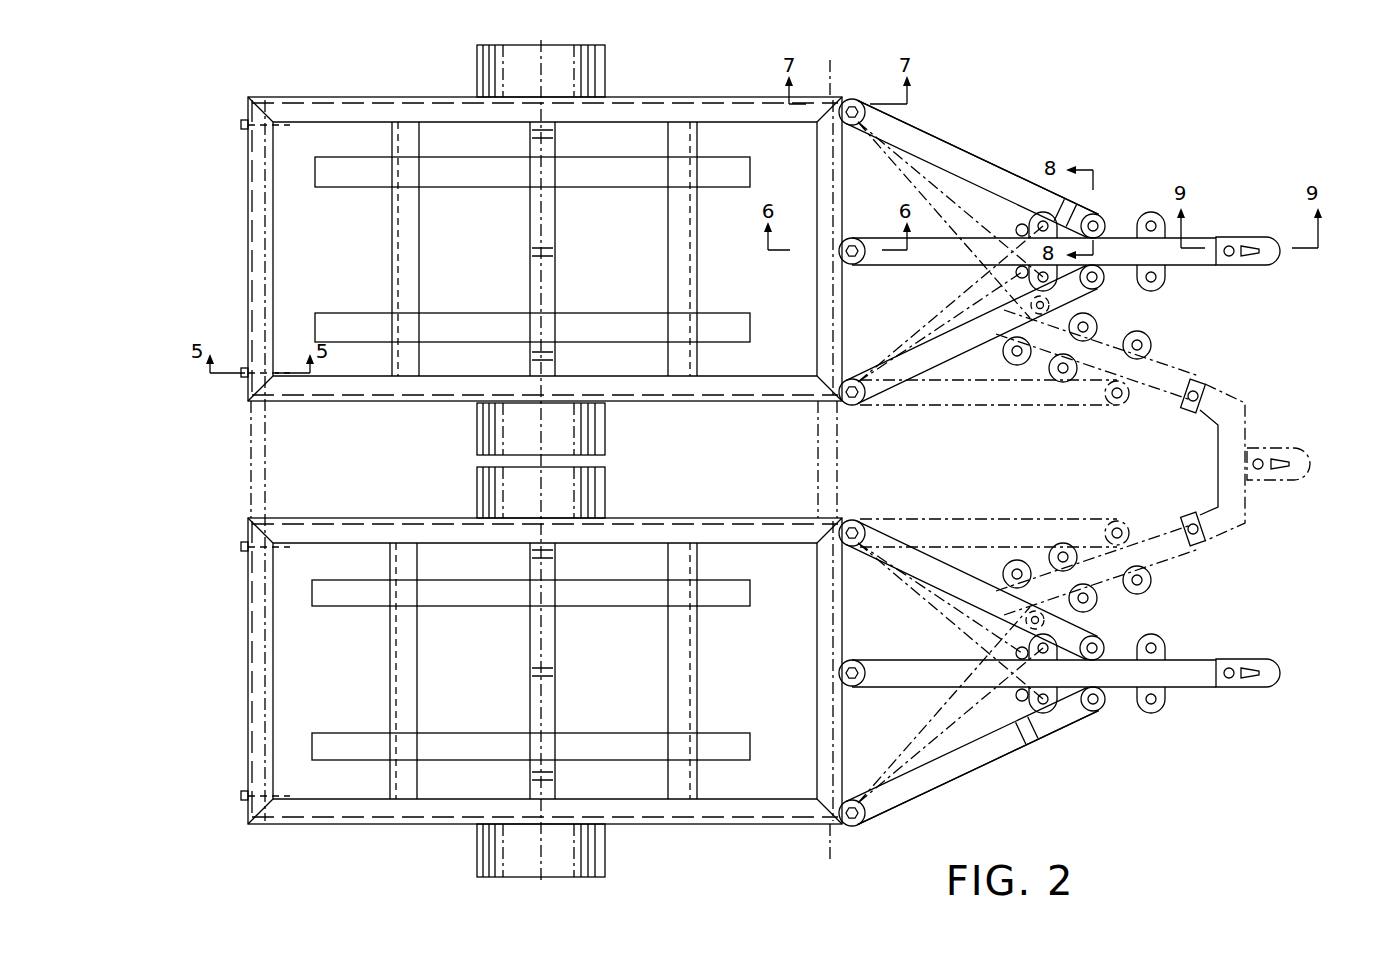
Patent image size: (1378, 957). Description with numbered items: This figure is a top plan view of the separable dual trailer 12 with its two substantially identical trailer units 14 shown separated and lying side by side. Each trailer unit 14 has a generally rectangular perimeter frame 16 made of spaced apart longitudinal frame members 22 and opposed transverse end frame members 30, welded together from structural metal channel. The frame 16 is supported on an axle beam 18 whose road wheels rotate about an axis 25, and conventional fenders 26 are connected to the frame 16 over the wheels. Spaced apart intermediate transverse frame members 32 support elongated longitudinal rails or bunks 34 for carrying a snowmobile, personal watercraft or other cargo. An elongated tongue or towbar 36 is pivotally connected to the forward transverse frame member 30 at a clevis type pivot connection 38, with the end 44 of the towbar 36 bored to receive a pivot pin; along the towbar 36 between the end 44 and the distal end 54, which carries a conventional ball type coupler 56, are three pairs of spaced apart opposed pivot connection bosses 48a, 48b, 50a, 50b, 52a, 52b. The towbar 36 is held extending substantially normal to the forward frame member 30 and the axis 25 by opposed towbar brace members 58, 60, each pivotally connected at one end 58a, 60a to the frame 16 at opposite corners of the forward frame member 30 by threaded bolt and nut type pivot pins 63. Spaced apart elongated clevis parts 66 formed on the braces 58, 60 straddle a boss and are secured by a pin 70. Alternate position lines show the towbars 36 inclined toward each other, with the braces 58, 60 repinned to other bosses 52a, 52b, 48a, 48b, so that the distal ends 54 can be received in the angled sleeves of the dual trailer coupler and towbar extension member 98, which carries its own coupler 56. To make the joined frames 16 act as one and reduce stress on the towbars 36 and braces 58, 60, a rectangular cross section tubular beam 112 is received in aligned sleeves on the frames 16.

The dual trailer 12 is at (1260, 377).
The trailer unit 14 is at (948, 139).
The perimeter frame 16 is at (322, 97).
The axle beam 18 is at (553, 240).
The longitudinal frame member 22 is at (312, 125).
The axis 25 is at (547, 152).
The fender 26 is at (606, 68).
The transverse end frame member 30 is at (275, 246).
The intermediate transverse frame member 32 is at (420, 290).
The longitudinal rail or bunk 34 is at (455, 188).
The tongue or towbar 36 is at (880, 244).
The pivot connection 38 is at (855, 268).
The end of the towbar 44 is at (850, 240).
The pivot connection boss 48a is at (1157, 210).
The pivot connection boss 48b is at (1165, 280).
The pivot connection boss 50a is at (1100, 220).
The pivot connection boss 50b is at (1100, 285).
The pivot connection boss 52a is at (1020, 232).
The pivot connection boss 52b is at (1010, 250).
The distal end of the towbar 54 is at (1200, 238).
The ball type coupler 56 is at (1265, 268).
The towbar brace member 58 is at (966, 152).
The end of brace member 58a is at (865, 105).
The towbar brace member 60 is at (935, 362).
The end of brace member 60a is at (856, 405).
The pivot pin 63 is at (855, 128).
The clevis part 66 is at (1050, 338).
The pin 70 is at (1095, 224).
The dual trailer coupler and towbar extension member 98 is at (1252, 418).
The tubular beam 112 is at (250, 479).